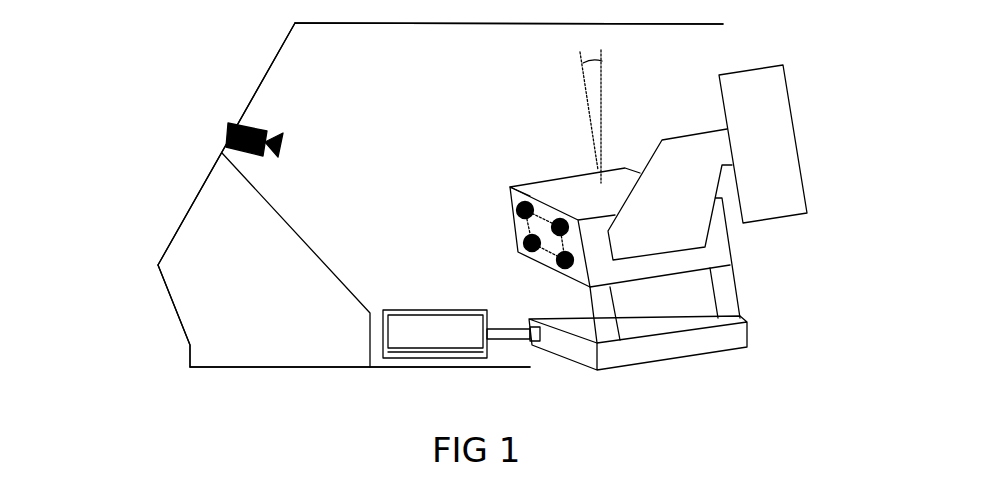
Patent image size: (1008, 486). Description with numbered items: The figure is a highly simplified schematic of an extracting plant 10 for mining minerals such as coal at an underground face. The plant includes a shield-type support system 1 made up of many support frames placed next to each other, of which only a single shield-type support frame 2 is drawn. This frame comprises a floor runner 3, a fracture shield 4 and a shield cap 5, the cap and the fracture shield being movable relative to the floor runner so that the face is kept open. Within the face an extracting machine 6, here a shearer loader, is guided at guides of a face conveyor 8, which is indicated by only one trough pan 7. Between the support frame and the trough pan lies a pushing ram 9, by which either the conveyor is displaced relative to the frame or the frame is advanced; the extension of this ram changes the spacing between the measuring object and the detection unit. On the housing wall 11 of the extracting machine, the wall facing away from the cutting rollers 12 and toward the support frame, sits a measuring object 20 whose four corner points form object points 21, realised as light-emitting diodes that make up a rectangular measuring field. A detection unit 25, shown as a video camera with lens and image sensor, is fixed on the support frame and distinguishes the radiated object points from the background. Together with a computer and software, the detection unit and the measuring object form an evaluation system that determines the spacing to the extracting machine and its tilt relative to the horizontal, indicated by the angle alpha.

The shield-type support system 1 is at (222, 73).
The shield-type support frame 2 is at (166, 208).
The floor runner 3 is at (291, 365).
The fracture shield 4 is at (212, 175).
The shield cap 5 is at (462, 25).
The extracting machine 6 is at (585, 141).
The trough pan 7 is at (695, 342).
The face conveyor 8 is at (755, 328).
The pushing ram 9 is at (437, 338).
The extracting plant 10 is at (168, 130).
The housing wall 11 is at (517, 228).
The cutting rollers 12 is at (778, 127).
The measuring object 20 is at (558, 197).
The object points 21 is at (522, 190).
The detection unit 25 is at (263, 119).